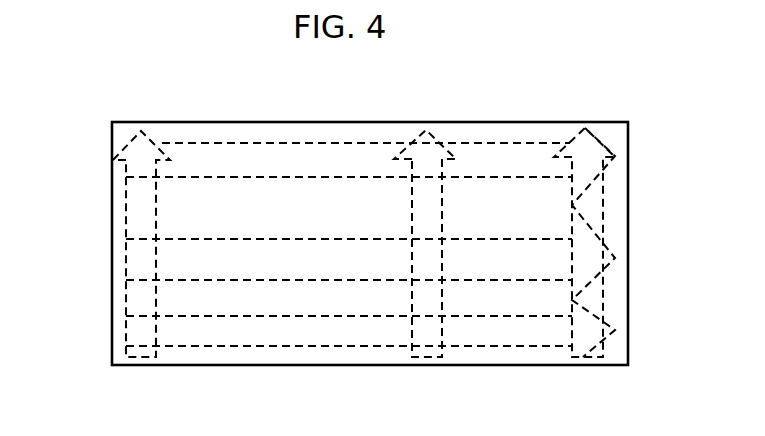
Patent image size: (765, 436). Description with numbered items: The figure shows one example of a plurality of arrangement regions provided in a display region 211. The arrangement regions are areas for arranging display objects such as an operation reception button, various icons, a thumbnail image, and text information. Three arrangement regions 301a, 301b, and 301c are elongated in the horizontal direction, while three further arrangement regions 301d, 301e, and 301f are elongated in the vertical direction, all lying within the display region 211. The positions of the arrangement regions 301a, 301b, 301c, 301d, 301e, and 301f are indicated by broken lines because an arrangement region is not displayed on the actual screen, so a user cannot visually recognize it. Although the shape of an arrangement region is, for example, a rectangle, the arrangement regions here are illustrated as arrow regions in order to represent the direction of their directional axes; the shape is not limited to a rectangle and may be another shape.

The display region 211 is at (250, 122).
The arrangement region 301a is at (228, 169).
The arrangement region 301b is at (250, 243).
The arrangement region 301c is at (259, 342).
The arrangement region 301d is at (128, 210).
The arrangement region 301e is at (440, 197).
The arrangement region 301f is at (603, 190).